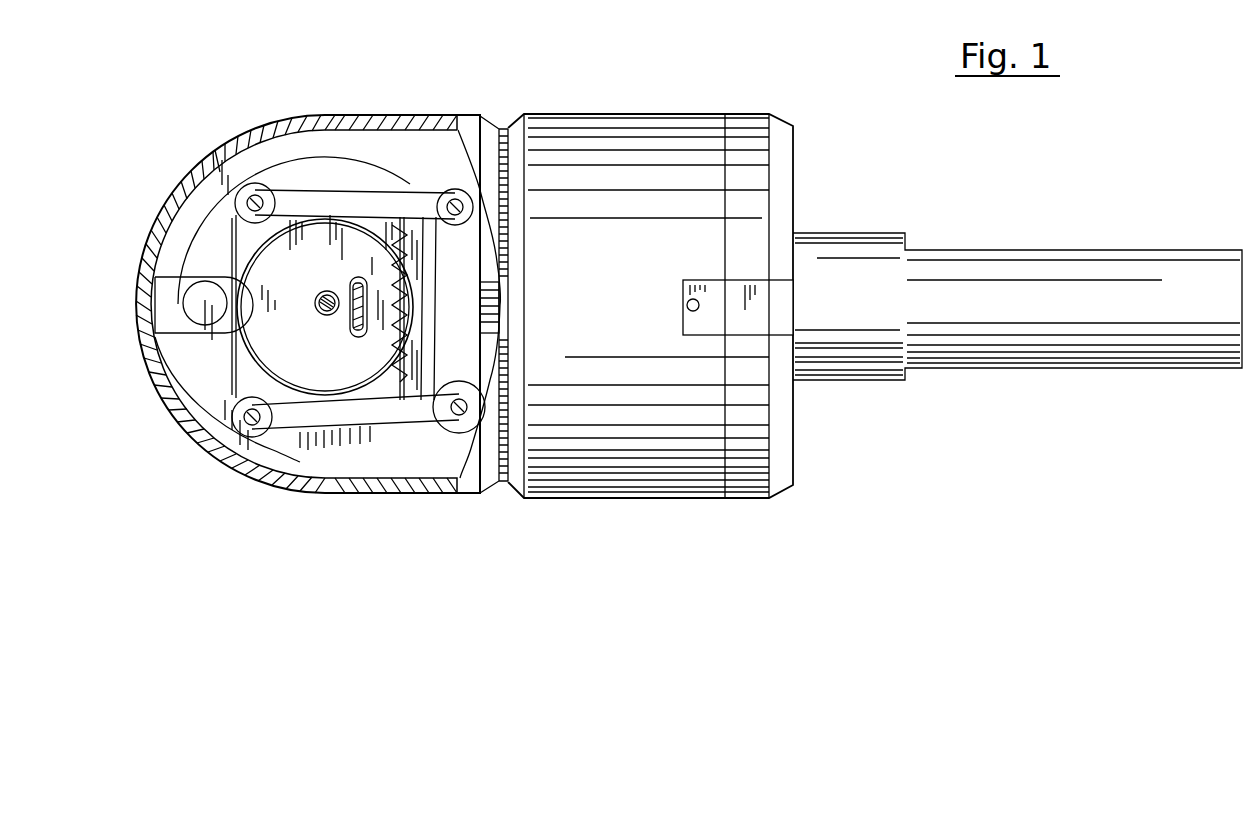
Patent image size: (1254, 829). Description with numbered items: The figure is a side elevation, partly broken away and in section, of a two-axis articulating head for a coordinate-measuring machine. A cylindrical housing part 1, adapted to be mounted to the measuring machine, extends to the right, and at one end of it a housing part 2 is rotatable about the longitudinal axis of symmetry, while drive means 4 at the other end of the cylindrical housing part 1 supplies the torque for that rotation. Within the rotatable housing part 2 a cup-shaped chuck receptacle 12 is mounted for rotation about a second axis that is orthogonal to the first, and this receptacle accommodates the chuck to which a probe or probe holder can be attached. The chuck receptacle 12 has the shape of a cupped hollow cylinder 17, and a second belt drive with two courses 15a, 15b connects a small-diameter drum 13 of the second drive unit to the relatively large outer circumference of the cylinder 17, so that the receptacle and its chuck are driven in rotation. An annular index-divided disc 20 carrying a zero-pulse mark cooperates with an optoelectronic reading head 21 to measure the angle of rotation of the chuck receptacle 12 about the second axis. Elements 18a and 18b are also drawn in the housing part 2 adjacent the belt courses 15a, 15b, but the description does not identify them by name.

The cylindrical housing part 1 is at (690, 125).
The housing part 2 is at (393, 120).
The drive means 4 is at (1052, 270).
The chuck receptacle 12 is at (275, 350).
The small-diameter drum 13 is at (500, 300).
The belt course 15a is at (296, 188).
The belt course 15b is at (330, 445).
The cupped hollow cylinder 17 is at (387, 395).
The upper lining 18a is at (362, 200).
The lower lining 18b is at (302, 452).
The annular index-divided disc 20 is at (207, 237).
The optoelectronic reading head 21 is at (205, 312).